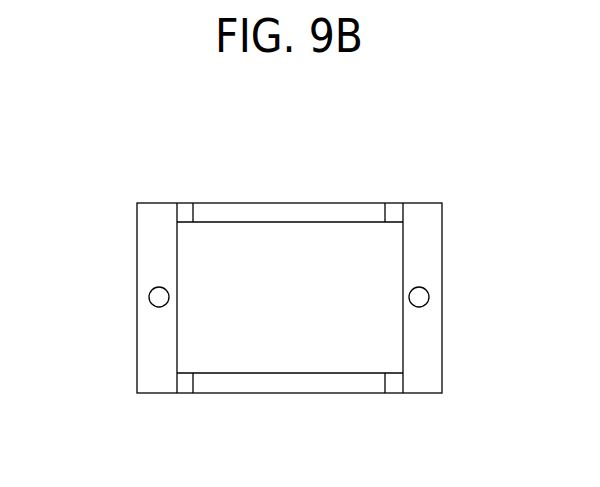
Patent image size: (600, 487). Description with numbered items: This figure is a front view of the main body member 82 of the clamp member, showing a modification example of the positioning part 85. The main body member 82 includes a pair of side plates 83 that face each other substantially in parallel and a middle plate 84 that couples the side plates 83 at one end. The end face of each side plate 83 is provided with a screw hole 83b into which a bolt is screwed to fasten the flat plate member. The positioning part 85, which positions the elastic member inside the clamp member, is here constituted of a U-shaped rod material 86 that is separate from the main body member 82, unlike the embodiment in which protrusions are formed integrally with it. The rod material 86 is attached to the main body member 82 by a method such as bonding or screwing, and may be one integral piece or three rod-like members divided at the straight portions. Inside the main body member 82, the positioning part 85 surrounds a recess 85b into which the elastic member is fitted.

The main body member 82 is at (128, 250).
The side plate 83 is at (137, 347).
The screw hole 83b is at (159, 297).
The middle plate 84 is at (298, 253).
The positioning part 85 is at (236, 213).
The recess 85b is at (362, 264).
The U-shaped rod material 86 is at (385, 212).